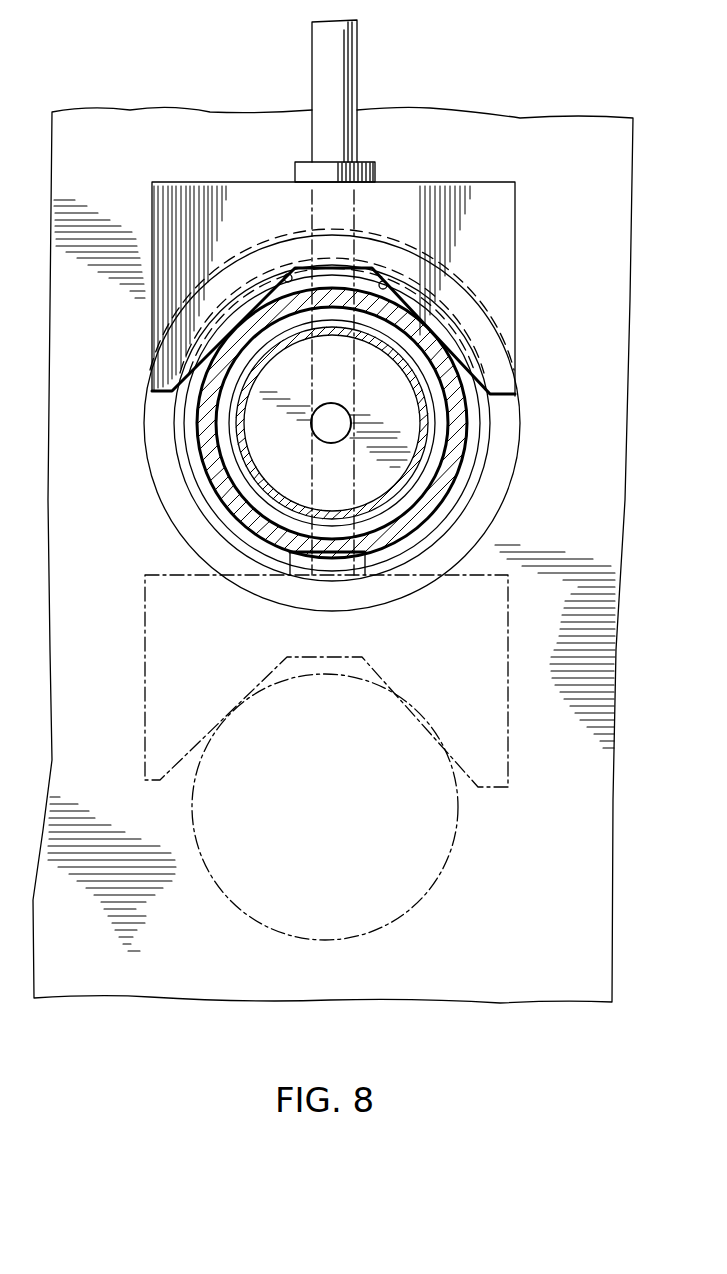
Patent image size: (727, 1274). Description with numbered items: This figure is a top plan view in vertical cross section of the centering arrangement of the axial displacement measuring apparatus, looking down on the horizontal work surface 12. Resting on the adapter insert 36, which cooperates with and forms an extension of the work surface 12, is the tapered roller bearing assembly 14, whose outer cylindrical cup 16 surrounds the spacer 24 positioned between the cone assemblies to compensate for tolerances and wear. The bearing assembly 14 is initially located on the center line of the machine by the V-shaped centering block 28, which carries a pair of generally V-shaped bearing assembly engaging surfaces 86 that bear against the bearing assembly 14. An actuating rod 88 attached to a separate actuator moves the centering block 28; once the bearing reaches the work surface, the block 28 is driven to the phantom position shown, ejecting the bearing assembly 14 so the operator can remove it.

The horizontal work surface 12 is at (613, 453).
The tapered roller bearing assembly 14 is at (452, 500).
The cylindrical cup 16 is at (457, 417).
The spacer 24 is at (403, 370).
The V-shaped centering block 28 is at (500, 266).
The adapter insert 36 is at (500, 478).
The V-shaped bearing assembly engaging surfaces 86 is at (289, 266).
The actuating rod 88 is at (343, 69).